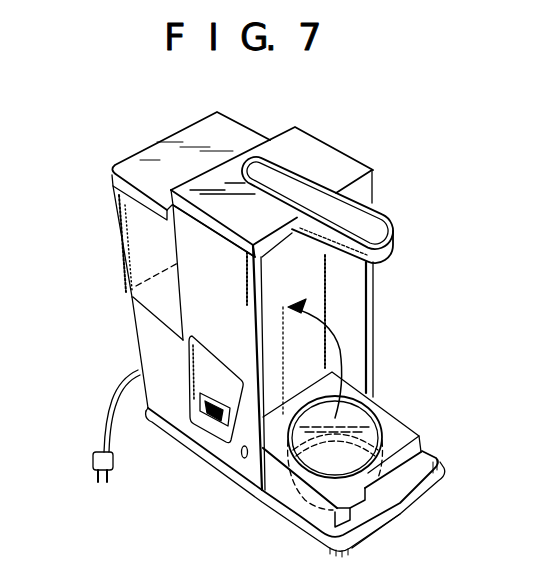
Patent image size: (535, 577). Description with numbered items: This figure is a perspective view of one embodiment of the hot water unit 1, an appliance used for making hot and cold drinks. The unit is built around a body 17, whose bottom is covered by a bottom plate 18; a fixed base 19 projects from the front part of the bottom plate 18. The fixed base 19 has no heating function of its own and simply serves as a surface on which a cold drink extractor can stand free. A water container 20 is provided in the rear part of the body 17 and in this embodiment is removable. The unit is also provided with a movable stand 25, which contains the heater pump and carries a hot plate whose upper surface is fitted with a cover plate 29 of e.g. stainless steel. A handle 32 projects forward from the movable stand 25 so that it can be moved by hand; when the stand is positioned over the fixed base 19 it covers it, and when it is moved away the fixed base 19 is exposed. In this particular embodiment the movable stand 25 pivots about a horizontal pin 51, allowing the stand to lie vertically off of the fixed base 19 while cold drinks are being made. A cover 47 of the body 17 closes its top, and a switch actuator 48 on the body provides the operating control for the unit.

The hot water unit 1 is at (383, 277).
The body 17 is at (143, 332).
The bottom plate 18 is at (413, 504).
The fixed base 19 is at (274, 519).
The water container 20 is at (127, 224).
The movable stand 25 is at (405, 434).
The cover plate 29 is at (354, 414).
The handle 32 is at (366, 520).
The cover 47 is at (328, 155).
The switch actuator 48 is at (213, 400).
The horizontal pin 51 is at (242, 460).